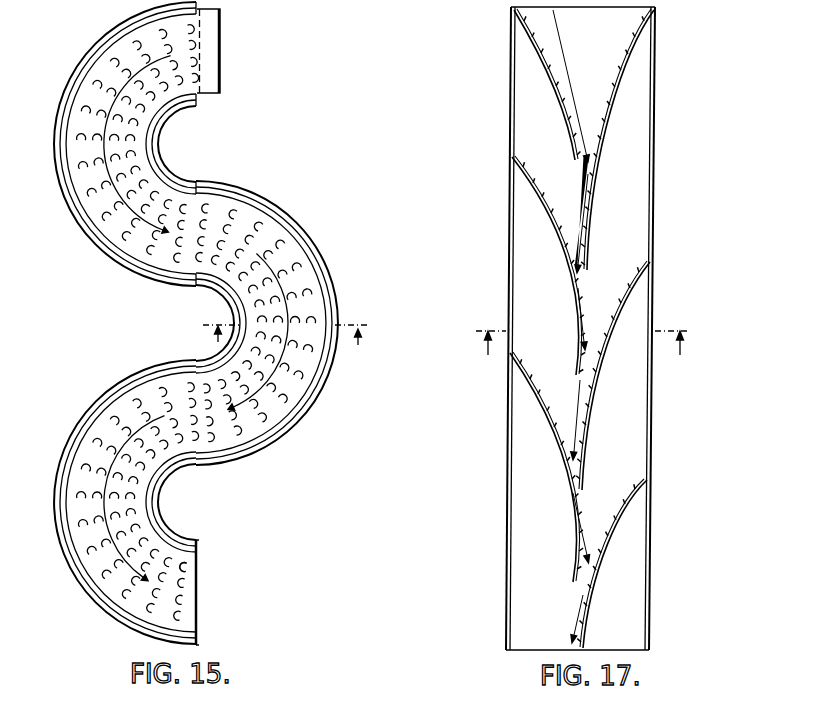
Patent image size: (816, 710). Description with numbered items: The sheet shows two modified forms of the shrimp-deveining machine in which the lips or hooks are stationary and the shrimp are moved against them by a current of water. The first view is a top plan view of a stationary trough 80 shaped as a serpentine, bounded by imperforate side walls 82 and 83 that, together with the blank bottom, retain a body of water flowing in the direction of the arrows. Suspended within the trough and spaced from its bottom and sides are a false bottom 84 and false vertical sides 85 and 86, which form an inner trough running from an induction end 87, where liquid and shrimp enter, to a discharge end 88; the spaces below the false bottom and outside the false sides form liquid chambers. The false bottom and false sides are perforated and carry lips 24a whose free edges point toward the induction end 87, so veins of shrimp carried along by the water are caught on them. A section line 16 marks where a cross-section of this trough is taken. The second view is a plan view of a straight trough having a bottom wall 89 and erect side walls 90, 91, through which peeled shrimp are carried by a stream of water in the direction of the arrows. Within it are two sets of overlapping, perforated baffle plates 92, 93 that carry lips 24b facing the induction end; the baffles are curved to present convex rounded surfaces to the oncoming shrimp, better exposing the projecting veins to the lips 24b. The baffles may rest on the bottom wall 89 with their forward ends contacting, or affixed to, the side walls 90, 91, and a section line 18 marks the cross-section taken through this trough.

In FIG. 15, the stationary trough 80 is at (286, 194).
In FIG. 15, the side wall 82 is at (117, 390).
In FIG. 15, the side wall 83 is at (271, 447).
In FIG. 15, the false bottom 84 is at (191, 566).
In FIG. 15, the false vertical side 85 is at (155, 382).
In FIG. 15, the false vertical side 86 is at (151, 168).
In FIG. 15, the induction end 87 is at (210, 53).
In FIG. 15, the discharge end 88 is at (198, 605).
In FIG. 15, the lips 24a is at (214, 228).
In FIG. 15, the section line 16- 16 is at (289, 323).
In FIG. 17, the bottom wall 89 is at (550, 607).
In FIG. 17, the erect side wall 90 is at (506, 567).
In FIG. 17, the erect side wall 91 is at (648, 557).
In FIG. 17, the baffle plates 92 is at (547, 58).
In FIG. 17, the baffle plates 93 is at (630, 487).
In FIG. 17, the lips 24b is at (558, 82).
In FIG. 17, the section line 18- 18 is at (583, 331).